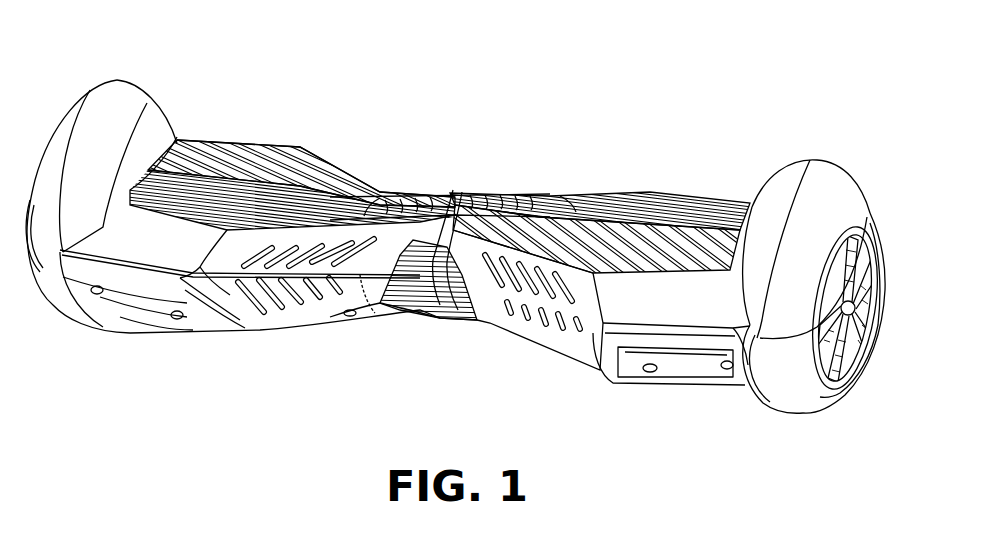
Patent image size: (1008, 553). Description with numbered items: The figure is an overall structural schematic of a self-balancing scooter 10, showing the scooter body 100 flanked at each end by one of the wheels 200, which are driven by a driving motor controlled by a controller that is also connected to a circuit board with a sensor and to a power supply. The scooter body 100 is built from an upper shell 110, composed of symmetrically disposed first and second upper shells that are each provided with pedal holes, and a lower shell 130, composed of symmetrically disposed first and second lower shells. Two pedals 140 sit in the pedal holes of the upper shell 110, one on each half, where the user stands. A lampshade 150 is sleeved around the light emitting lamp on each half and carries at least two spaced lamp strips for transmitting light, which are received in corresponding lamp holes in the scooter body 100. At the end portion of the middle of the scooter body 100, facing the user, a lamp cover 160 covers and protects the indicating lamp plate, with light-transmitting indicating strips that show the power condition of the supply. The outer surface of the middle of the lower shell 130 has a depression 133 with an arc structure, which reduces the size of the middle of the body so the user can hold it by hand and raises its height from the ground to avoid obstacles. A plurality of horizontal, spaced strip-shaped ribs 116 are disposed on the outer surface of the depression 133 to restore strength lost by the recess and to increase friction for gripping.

The self-balancing scooter 10 is at (455, 103).
The scooter body 100 is at (350, 143).
The upper shell 110 is at (195, 270).
The strip-shaped ribs 116 is at (403, 302).
The lower shell 130 is at (250, 335).
The depression 133 is at (457, 325).
The pedals 140 is at (216, 140).
The lampshade 150 is at (293, 310).
The lamp cover 160 is at (487, 188).
The wheels 200 is at (90, 90).